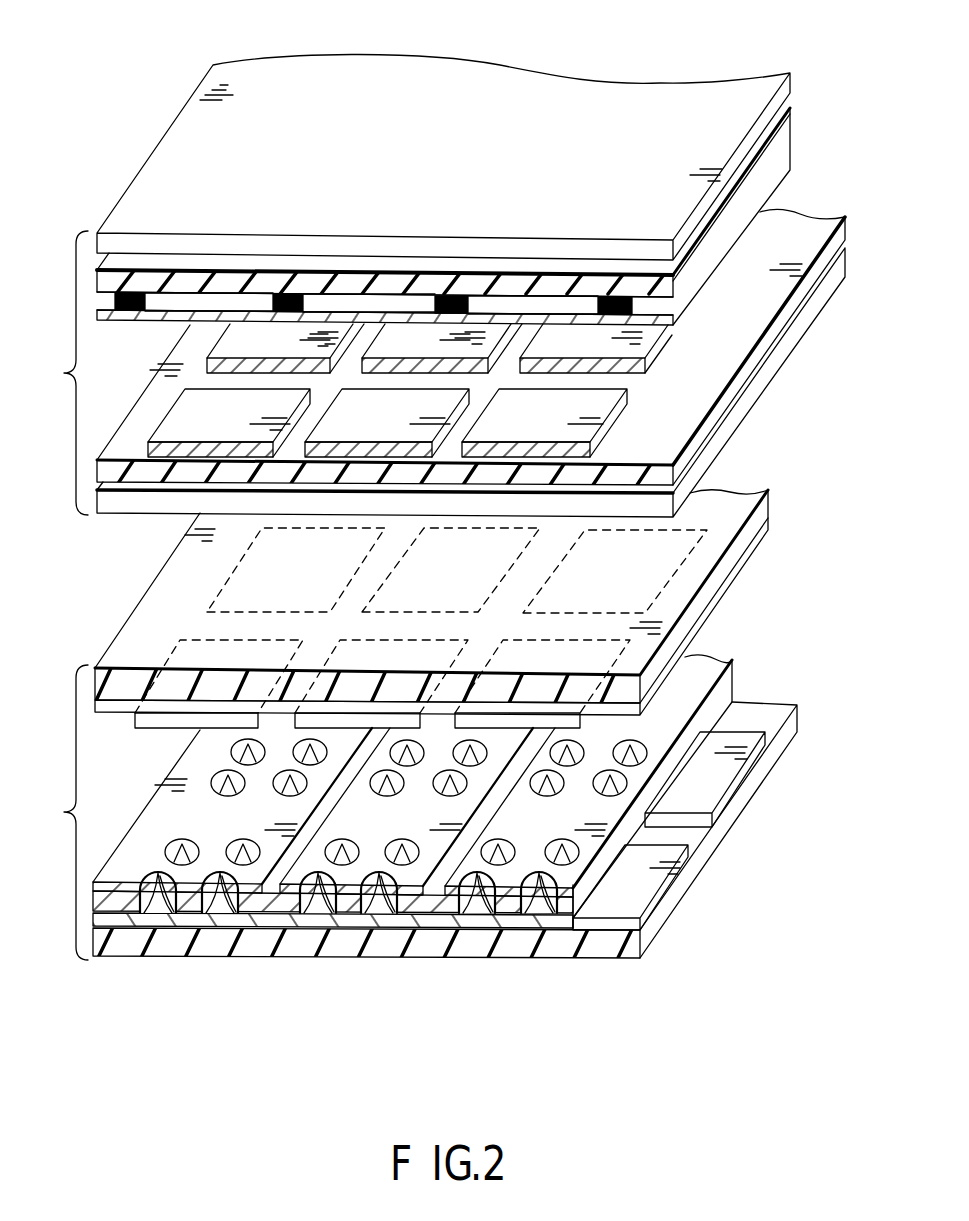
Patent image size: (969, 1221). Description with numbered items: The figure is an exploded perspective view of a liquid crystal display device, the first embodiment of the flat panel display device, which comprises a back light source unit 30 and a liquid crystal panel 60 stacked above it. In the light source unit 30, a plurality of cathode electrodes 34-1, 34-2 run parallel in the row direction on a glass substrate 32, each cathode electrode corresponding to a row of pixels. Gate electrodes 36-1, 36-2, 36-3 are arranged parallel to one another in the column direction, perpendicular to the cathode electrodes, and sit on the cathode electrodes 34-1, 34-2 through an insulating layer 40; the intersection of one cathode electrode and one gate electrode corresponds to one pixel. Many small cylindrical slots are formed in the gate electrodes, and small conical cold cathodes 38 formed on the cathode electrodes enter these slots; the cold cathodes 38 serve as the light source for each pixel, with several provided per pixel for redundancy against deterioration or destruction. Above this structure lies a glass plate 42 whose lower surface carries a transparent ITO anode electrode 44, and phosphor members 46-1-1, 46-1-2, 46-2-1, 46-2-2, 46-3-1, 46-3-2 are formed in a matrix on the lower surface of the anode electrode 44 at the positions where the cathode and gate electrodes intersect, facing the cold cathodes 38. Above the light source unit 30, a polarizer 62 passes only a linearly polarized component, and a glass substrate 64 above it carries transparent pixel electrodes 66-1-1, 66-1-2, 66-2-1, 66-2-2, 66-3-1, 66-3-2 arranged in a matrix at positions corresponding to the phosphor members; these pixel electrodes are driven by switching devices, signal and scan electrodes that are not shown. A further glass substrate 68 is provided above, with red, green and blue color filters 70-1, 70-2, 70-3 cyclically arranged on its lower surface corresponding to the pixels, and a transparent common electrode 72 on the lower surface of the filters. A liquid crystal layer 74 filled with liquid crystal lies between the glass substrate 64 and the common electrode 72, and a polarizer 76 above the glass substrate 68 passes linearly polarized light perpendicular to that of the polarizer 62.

The light source unit 30 is at (51, 812).
The glass substrate 32 is at (212, 947).
The cathode electrode 34-1 is at (633, 885).
The cathode electrode 34-2 is at (703, 775).
The gate electrode 36-1 is at (512, 872).
The gate electrode 36-2 is at (352, 872).
The gate electrode 36-3 is at (125, 867).
The cold cathode 38 is at (540, 902).
The insulating layer 40 is at (728, 692).
The glass plate 42 is at (768, 498).
The anode electrode 44 is at (768, 527).
The phosphor member 46-1-1 is at (457, 720).
The phosphor member 46-1-2 is at (660, 567).
The phosphor member 46-2-1 is at (297, 720).
The phosphor member 46-2-2 is at (390, 598).
The phosphor member 46-3-1 is at (157, 713).
The phosphor member 46-3-2 is at (238, 600).
The liquid crystal panel 60 is at (51, 373).
The polarizer 62 is at (810, 310).
The glass substrate 64 is at (823, 222).
The pixel electrode 66-1-1 is at (573, 398).
The pixel electrode 66-1-2 is at (634, 337).
The pixel electrode 66-2-1 is at (412, 398).
The pixel electrode 66-2-2 is at (477, 337).
The pixel electrode 66-3-1 is at (250, 398).
The pixel electrode 66-3-2 is at (307, 333).
The glass substrate 68 is at (790, 125).
The red filter 70-1 is at (552, 303).
The green filter 70-2 is at (367, 303).
The blue filter 70-3 is at (190, 303).
The common electrode 72 is at (790, 158).
The liquid crystal layer 74 is at (680, 463).
The polarizer 76 is at (790, 85).